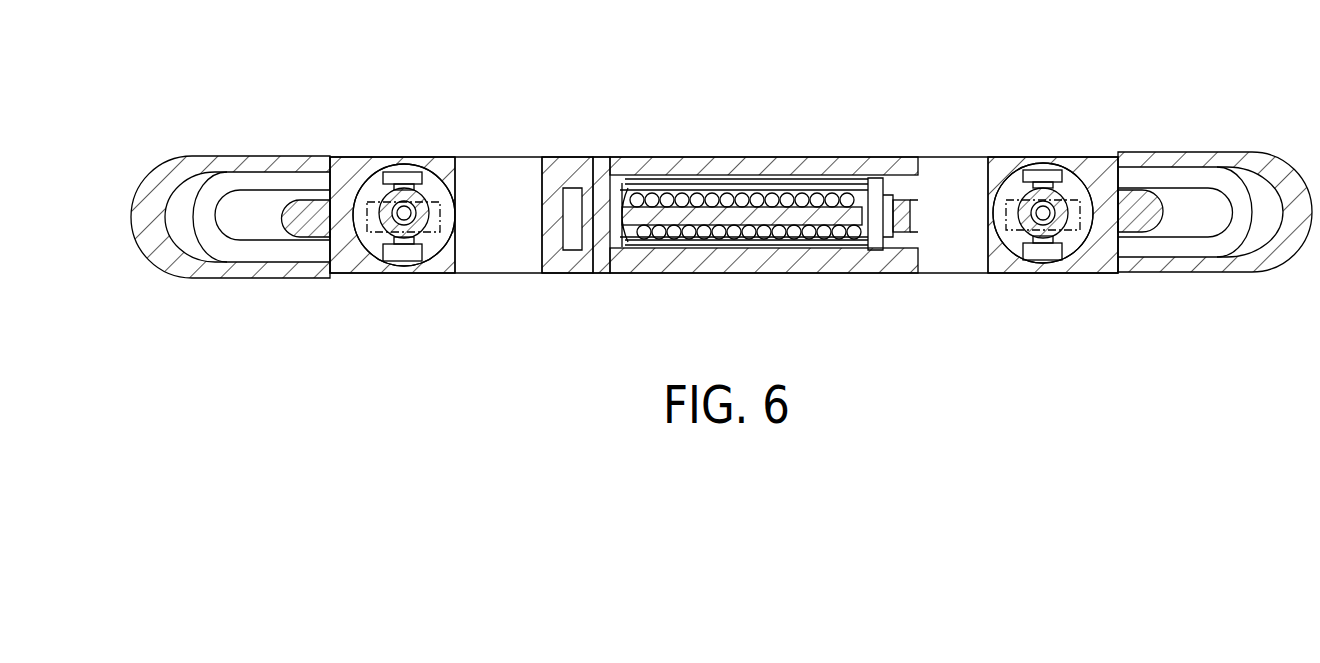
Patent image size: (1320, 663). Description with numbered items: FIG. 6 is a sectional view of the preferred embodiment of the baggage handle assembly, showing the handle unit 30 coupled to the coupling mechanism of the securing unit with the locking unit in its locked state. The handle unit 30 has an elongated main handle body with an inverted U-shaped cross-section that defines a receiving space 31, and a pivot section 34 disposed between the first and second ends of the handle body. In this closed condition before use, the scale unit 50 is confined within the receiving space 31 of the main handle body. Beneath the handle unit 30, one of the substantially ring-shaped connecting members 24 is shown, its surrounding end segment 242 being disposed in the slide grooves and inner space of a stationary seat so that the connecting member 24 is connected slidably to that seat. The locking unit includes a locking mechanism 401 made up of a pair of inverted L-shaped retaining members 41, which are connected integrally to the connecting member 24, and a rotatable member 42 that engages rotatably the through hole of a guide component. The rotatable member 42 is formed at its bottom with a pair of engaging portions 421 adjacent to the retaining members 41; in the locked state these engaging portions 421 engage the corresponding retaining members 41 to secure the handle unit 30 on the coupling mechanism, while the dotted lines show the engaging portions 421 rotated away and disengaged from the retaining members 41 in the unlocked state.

The connecting member 24 is at (1215, 206).
The surrounding end segment 242 is at (1185, 182).
The handle unit 30 is at (768, 157).
The receiving space 31 is at (830, 182).
The pivot section 34 is at (594, 262).
The retaining member 41 is at (418, 171).
The locking mechanism 401 is at (392, 168).
The rotatable member 42 is at (1084, 168).
The engaging portion 421 is at (382, 258).
The scale unit 50 is at (692, 193).